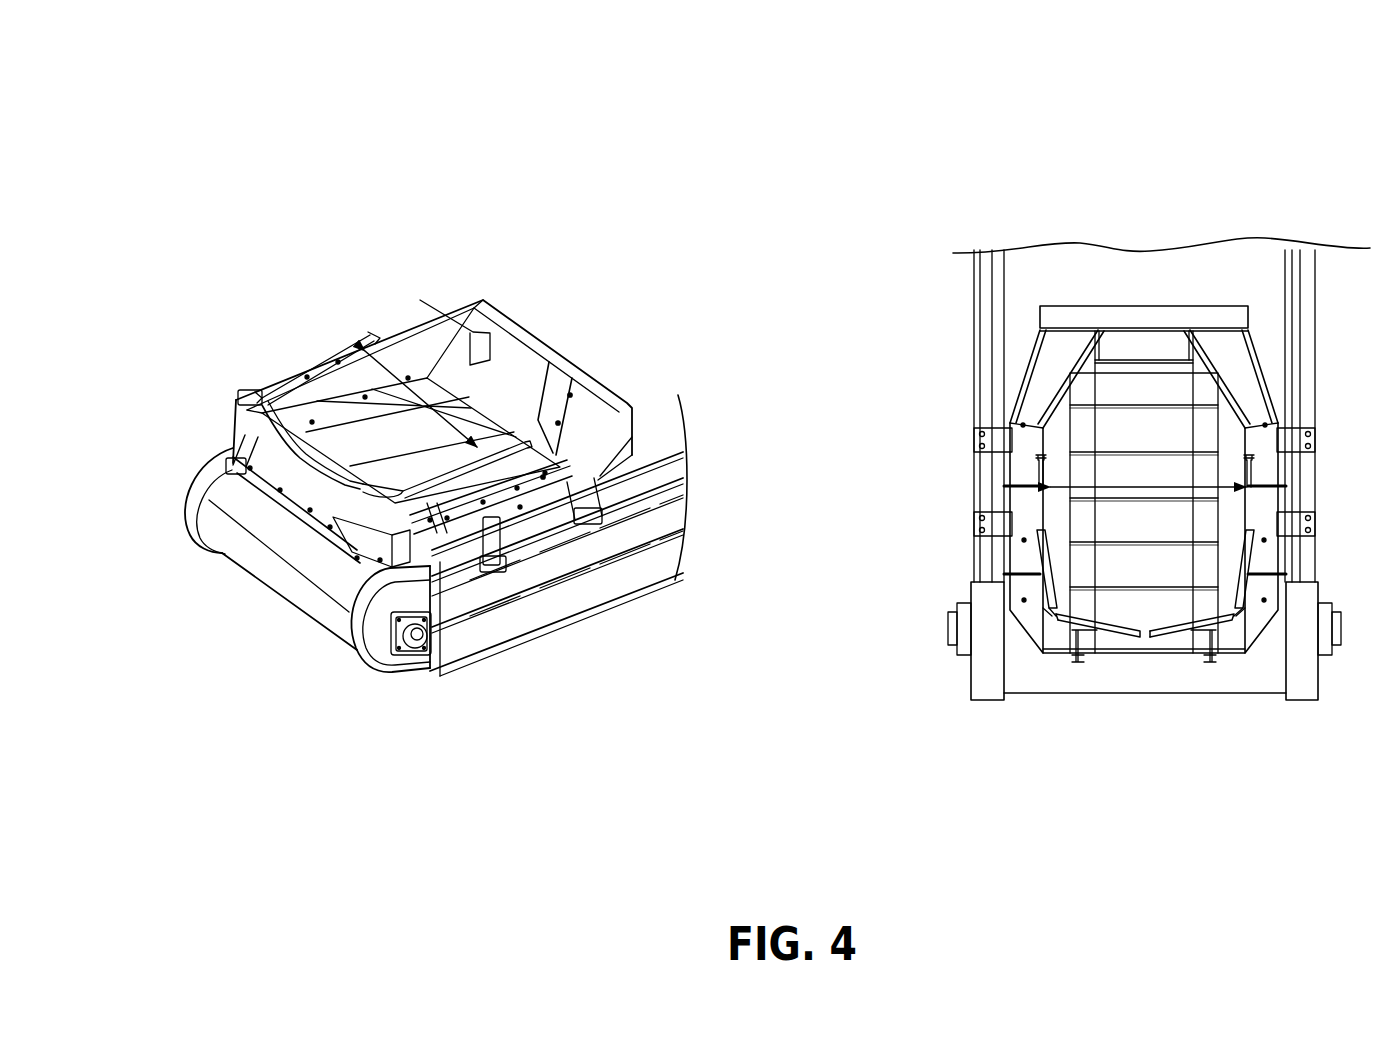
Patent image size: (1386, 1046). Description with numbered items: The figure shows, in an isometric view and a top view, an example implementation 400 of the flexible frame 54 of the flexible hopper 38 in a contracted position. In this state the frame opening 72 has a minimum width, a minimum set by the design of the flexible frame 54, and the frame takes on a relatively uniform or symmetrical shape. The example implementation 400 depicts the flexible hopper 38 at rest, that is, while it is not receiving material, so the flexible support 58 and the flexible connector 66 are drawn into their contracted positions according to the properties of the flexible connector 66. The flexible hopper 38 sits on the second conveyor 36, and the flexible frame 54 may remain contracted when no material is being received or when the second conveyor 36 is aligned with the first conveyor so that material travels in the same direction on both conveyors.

The example implementation 400 is at (290, 65).
The second conveyor 36 is at (342, 684).
The flexible hopper 38 is at (289, 246).
The flexible frame 54 is at (289, 333).
The flexible support 58 is at (283, 375).
The flexible connector 66 is at (250, 405).
The frame opening 72 is at (403, 338).